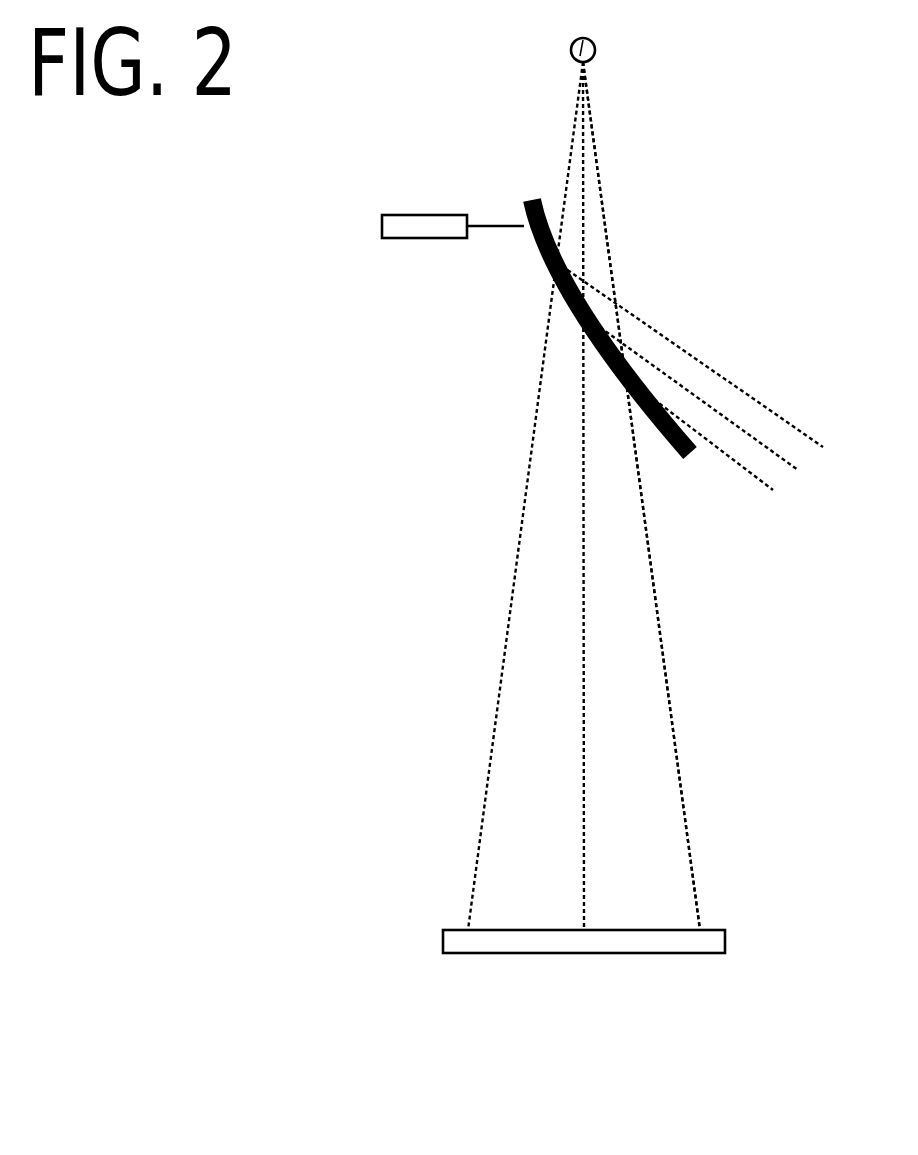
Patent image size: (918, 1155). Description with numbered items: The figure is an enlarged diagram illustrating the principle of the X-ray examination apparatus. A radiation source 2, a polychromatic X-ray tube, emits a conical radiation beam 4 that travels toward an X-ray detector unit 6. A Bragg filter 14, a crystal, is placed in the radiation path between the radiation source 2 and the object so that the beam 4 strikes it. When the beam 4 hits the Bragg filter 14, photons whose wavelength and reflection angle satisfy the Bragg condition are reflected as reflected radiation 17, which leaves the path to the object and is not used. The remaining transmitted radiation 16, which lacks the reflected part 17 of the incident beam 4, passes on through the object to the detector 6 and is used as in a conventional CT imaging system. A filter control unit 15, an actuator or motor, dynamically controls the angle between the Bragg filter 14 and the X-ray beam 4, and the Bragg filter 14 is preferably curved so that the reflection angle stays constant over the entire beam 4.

The radiation source 2 is at (596, 53).
The radiation beam 4 is at (598, 152).
The X-ray detector unit 6 is at (717, 940).
The Bragg filter 14 is at (545, 268).
The filter control unit 15 is at (417, 215).
The transmitted radiation 16 is at (663, 653).
The reflected radiation 17 is at (737, 388).